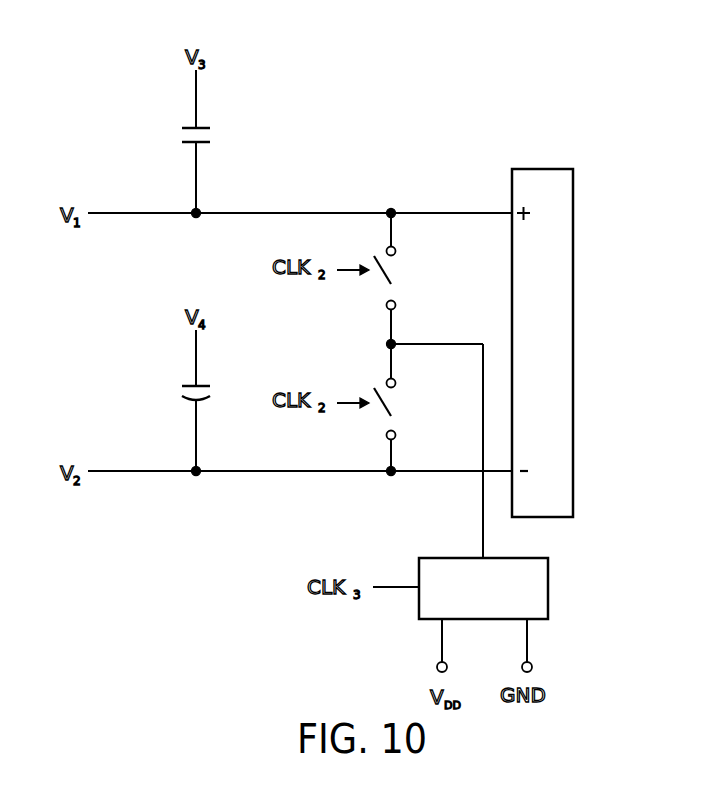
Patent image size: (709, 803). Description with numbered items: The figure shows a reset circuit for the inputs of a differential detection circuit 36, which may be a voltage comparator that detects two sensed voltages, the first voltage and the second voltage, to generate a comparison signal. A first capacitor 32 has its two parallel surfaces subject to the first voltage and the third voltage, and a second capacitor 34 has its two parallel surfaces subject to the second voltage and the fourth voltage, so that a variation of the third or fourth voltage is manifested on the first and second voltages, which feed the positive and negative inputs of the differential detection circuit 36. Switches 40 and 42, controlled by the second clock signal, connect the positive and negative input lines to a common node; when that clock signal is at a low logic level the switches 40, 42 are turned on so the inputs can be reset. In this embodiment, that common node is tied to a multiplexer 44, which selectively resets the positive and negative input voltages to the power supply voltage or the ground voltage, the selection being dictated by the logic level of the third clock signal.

The first capacitor 32 is at (215, 139).
The second capacitor 34 is at (179, 397).
The differential detection circuit 36 is at (542, 169).
The switch 40 is at (400, 269).
The switch 42 is at (400, 401).
The multiplexer 44 is at (550, 589).